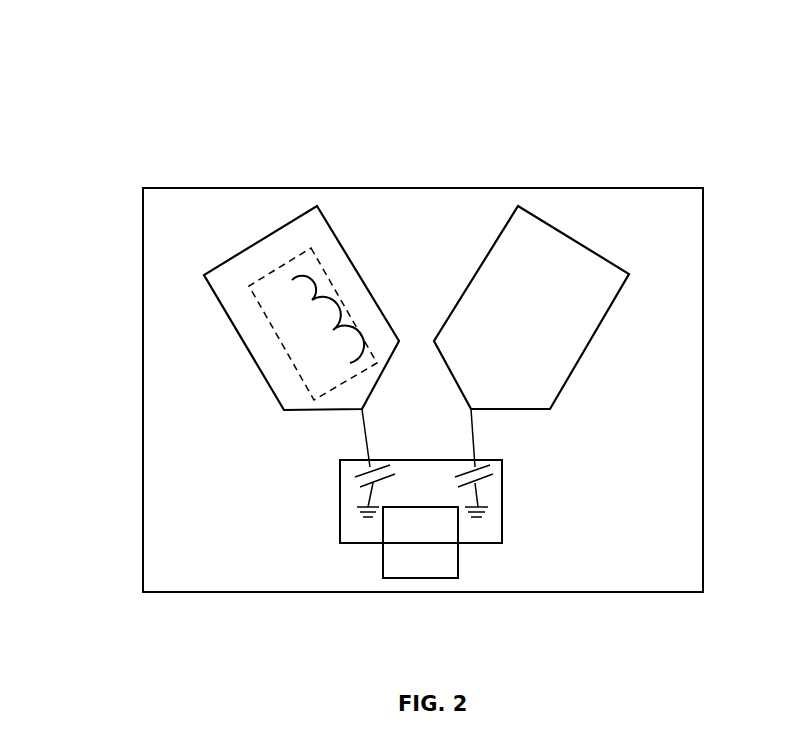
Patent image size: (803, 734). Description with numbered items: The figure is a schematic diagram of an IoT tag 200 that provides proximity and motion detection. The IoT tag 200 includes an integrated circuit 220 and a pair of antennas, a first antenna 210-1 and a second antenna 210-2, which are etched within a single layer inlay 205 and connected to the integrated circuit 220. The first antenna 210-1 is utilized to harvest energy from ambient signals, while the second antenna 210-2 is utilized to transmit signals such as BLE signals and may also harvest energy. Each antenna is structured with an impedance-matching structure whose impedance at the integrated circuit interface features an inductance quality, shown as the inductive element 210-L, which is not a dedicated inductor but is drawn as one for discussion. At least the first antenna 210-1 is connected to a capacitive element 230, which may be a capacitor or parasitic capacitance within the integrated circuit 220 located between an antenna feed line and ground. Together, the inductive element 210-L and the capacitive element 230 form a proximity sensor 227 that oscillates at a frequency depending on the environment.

The IoT tag 200 is at (170, 103).
The inlay 205 is at (155, 240).
The first antenna 210-1 is at (343, 265).
The second antenna 210-2 is at (560, 243).
The inductive element 210-L is at (333, 330).
The proximity sensor 227 is at (280, 340).
The capacitive element 230 is at (356, 477).
The integrated circuit 220 is at (383, 549).